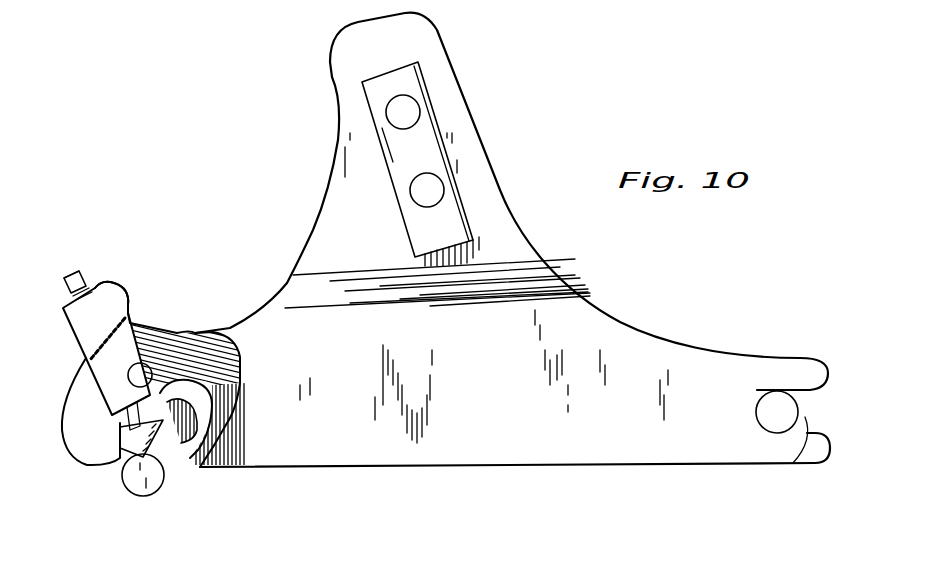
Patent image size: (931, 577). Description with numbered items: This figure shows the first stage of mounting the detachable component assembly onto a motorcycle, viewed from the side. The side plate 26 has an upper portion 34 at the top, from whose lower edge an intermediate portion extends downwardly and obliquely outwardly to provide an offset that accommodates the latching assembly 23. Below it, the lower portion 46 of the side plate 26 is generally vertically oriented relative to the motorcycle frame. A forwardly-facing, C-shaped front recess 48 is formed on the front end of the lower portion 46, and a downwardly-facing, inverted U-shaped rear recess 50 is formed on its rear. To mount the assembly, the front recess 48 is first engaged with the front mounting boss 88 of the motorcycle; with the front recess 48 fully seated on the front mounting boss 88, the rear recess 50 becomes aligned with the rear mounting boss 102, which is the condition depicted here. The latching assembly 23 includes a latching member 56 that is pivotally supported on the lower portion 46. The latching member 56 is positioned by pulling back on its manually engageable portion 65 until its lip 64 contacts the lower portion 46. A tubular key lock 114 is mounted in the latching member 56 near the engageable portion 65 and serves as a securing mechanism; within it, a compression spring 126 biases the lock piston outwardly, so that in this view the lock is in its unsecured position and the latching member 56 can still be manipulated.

The side plate 26 is at (653, 343).
The upper portion 34 is at (457, 125).
The lower portion 46 is at (470, 450).
The front recess 48 is at (797, 456).
The front mounting boss 88 is at (757, 408).
The latching assembly 23 is at (249, 363).
The lip 64 is at (130, 330).
The manually engageable portion 65 is at (117, 283).
The latching member 56 is at (93, 323).
The compression spring 126 is at (88, 286).
The tubular key lock 114 is at (97, 261).
The rear recess 50 is at (160, 453).
The rear mounting boss 102 is at (135, 482).